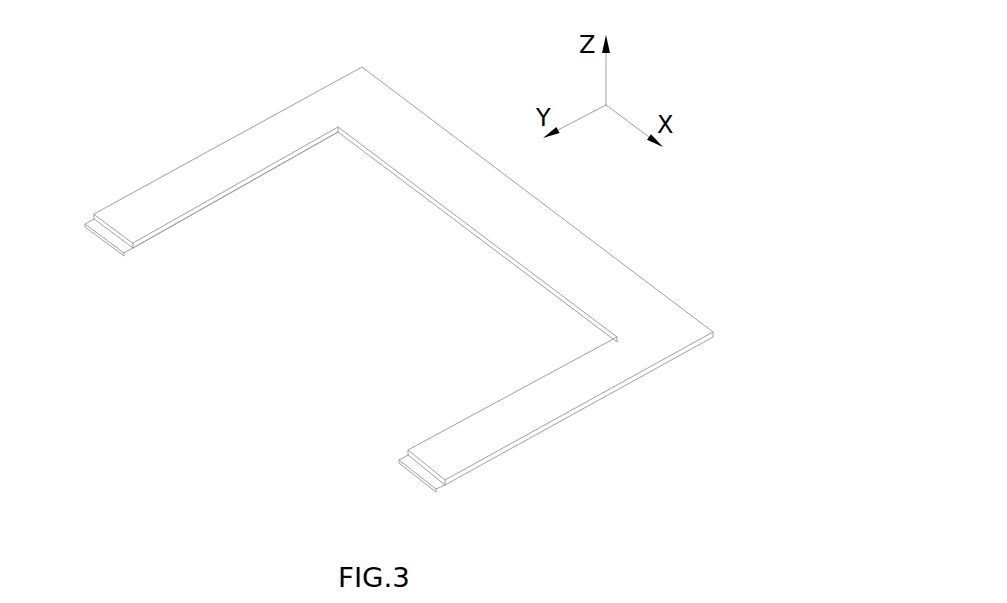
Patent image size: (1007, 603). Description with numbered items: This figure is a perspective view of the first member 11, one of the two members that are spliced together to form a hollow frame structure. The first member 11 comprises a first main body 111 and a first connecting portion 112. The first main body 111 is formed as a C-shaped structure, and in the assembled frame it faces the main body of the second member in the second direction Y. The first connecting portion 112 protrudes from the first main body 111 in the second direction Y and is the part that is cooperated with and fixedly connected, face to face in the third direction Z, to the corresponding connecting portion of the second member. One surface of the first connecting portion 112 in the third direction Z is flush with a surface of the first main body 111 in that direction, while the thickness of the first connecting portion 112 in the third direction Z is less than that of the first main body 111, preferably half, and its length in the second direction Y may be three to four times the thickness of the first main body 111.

The first member 11 is at (141, 133).
The first main body 111 is at (224, 192).
The first connecting portion 112 is at (127, 251).